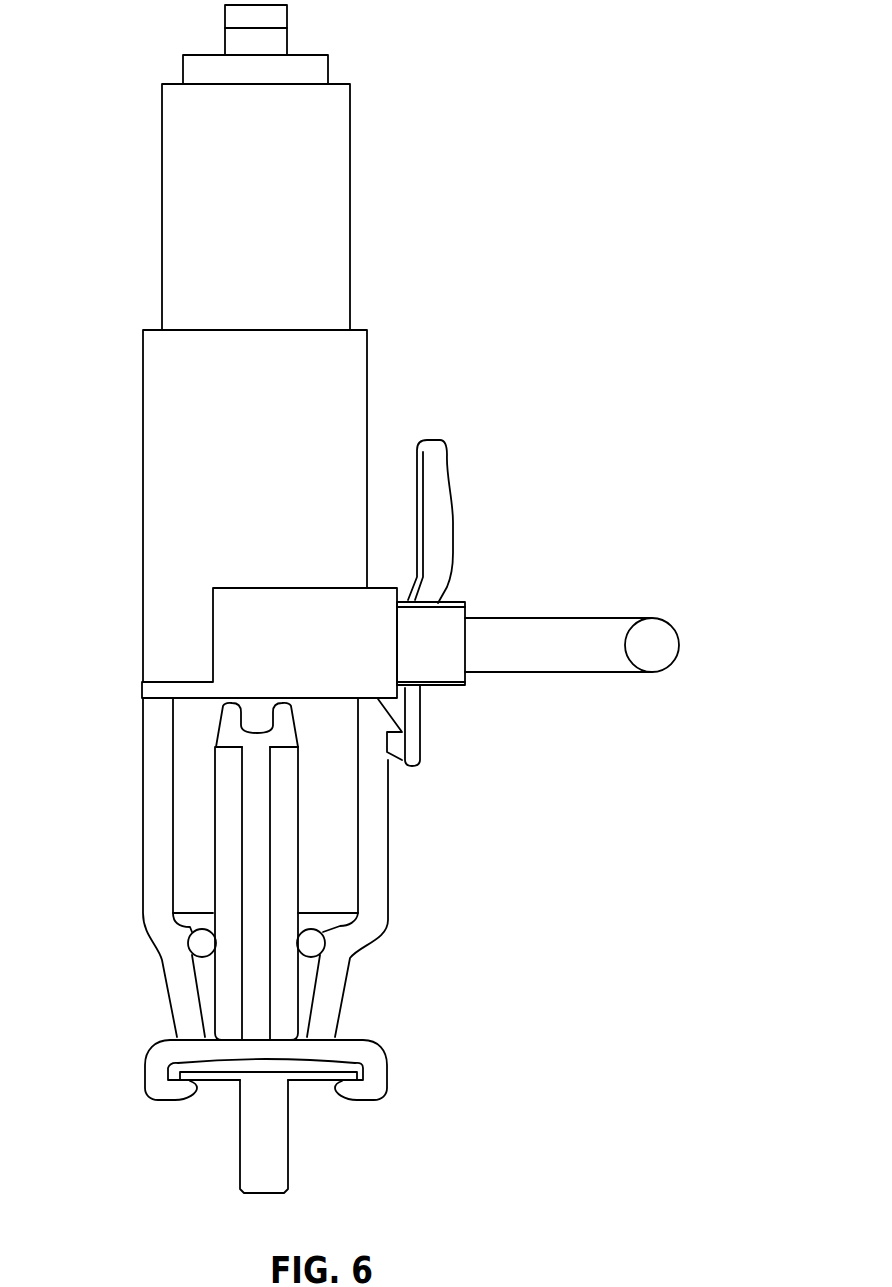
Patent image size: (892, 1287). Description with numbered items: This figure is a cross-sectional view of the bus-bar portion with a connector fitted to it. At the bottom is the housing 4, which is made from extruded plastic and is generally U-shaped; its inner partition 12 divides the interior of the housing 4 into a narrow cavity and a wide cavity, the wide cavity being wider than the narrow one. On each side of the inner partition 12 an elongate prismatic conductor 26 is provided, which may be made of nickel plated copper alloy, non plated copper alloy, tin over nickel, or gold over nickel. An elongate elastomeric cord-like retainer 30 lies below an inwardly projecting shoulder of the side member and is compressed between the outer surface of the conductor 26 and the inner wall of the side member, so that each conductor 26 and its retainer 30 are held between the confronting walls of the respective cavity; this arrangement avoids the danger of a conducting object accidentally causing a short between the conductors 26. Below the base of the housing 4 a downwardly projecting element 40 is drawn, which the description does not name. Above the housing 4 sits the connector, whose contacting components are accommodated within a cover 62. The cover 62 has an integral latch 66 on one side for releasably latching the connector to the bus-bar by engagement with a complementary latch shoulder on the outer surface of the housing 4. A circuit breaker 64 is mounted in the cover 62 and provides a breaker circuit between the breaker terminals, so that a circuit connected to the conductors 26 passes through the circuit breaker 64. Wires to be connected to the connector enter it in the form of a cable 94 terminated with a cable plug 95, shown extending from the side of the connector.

The housing 4 is at (153, 807).
The inner partition 12 is at (258, 843).
The elongate prismatic conductor 26 is at (227, 990).
The elongate elastomeric cord-like retainer 30 is at (200, 944).
The lower terminal pin 40 is at (257, 1130).
The cover 62 is at (155, 490).
The circuit breaker 64 is at (177, 191).
The integral latch 66 is at (438, 513).
The cable 94 is at (660, 653).
The cable plug 95 is at (440, 672).